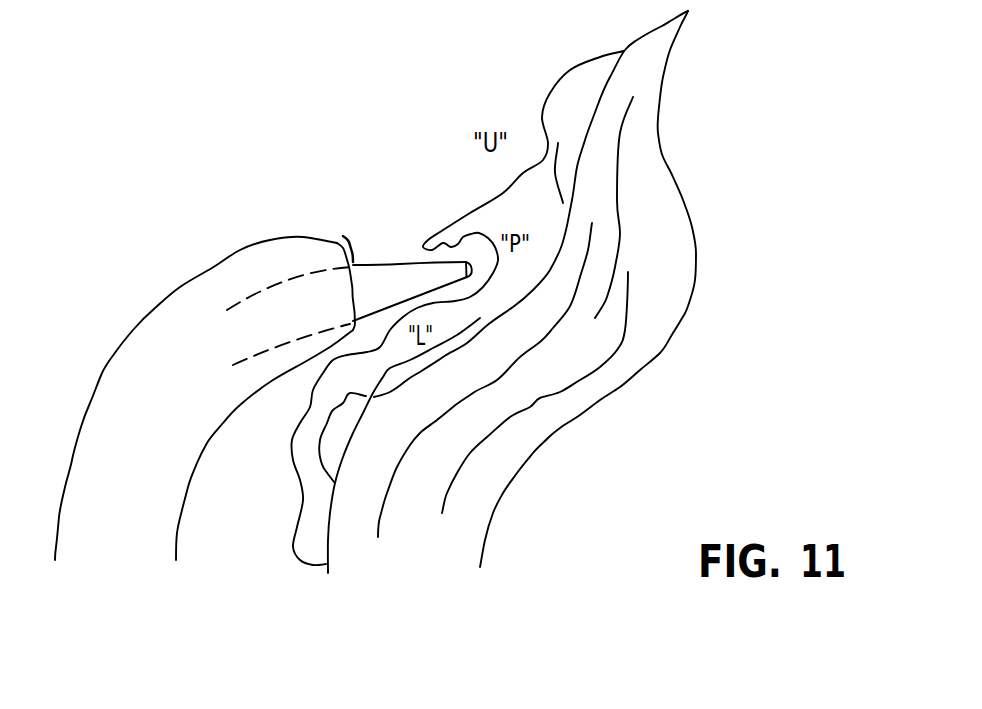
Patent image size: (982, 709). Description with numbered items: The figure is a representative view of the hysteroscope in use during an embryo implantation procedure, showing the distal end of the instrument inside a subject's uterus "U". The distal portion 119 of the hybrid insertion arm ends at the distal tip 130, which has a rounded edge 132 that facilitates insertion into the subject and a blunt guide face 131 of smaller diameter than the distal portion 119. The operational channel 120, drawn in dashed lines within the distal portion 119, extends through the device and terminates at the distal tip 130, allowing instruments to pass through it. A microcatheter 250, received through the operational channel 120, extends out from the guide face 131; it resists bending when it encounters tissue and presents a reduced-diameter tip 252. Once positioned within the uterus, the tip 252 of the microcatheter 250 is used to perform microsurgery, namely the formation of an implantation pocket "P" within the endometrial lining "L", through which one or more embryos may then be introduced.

The distal portion of hybrid insertion arm 119 is at (220, 357).
The operational channel 120 is at (290, 318).
The distal tip 130 is at (312, 235).
The guide face 131 is at (355, 255).
The rounded edge 132 is at (350, 245).
The microcatheter 250 is at (397, 304).
The tip 252 is at (450, 286).